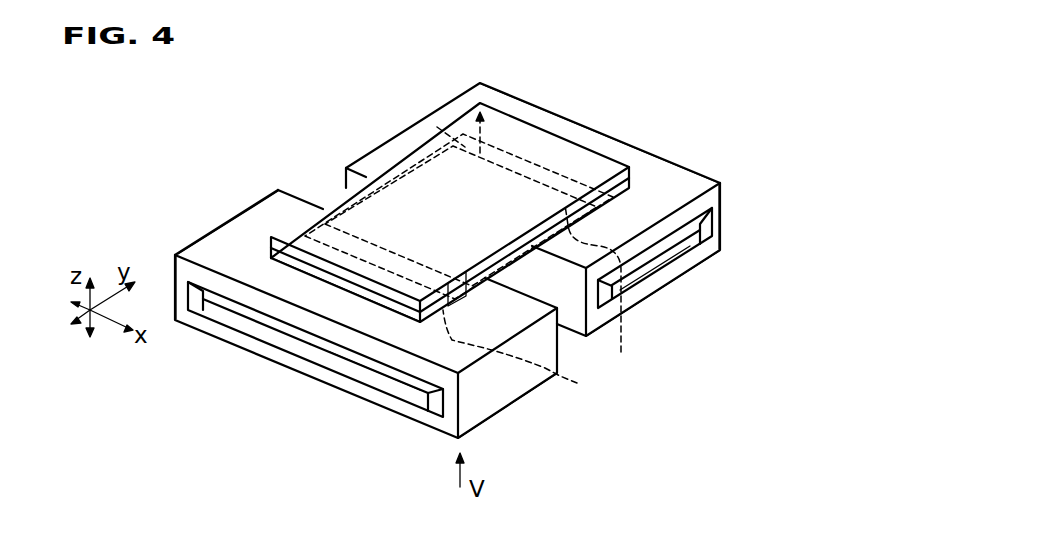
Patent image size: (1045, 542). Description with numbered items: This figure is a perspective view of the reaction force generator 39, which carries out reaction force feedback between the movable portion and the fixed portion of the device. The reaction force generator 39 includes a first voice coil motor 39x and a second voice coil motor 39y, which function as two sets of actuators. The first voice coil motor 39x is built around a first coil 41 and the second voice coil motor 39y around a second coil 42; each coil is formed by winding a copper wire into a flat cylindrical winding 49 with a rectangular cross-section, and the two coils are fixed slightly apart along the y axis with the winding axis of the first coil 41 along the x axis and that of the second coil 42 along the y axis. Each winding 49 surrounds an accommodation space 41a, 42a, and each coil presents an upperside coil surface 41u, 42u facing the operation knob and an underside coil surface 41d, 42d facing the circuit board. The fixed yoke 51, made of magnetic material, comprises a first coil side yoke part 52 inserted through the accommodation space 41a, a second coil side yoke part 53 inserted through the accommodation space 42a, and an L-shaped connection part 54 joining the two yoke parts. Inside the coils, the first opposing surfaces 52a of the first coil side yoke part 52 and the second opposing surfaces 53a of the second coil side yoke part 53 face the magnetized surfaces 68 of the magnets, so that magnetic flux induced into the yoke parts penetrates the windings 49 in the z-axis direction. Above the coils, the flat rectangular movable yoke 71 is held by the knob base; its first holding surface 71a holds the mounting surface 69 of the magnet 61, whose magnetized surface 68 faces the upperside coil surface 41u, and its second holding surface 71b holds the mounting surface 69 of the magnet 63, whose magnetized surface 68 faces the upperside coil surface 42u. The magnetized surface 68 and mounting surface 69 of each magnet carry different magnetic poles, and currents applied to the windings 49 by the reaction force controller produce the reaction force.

The reaction force generator 39 is at (321, 130).
The first voice coil motor 39x is at (631, 130).
The second voice coil motor 39y is at (272, 376).
The first coil 41 is at (690, 163).
The upperside coil surface of first coil 41u is at (650, 158).
The accommodation space of first coil 41a is at (712, 210).
The underside coil surface of first coil 41d is at (700, 264).
The second coil 42 is at (243, 210).
The upperside coil surface of second coil 42u is at (200, 243).
The accommodation space of second coil 42a is at (178, 273).
The underside coil surface of second coil 42d is at (497, 413).
The winding 49 is at (457, 283).
The fixed yoke 51 is at (203, 311).
The first coil side yoke part 52 is at (708, 233).
The first opposing surfaces 52a is at (667, 248).
The second coil side yoke part 53 is at (425, 408).
The second opposing surfaces 53a is at (377, 368).
The connection part 54 is at (387, 135).
The magnet 61 is at (690, 188).
The magnet 63 is at (293, 265).
The magnetized surface 68 is at (630, 240).
The mounting surface 69 is at (437, 127).
The movable yoke 71 is at (487, 133).
The first holding surface 71a is at (602, 291).
The second holding surface 71b is at (527, 355).